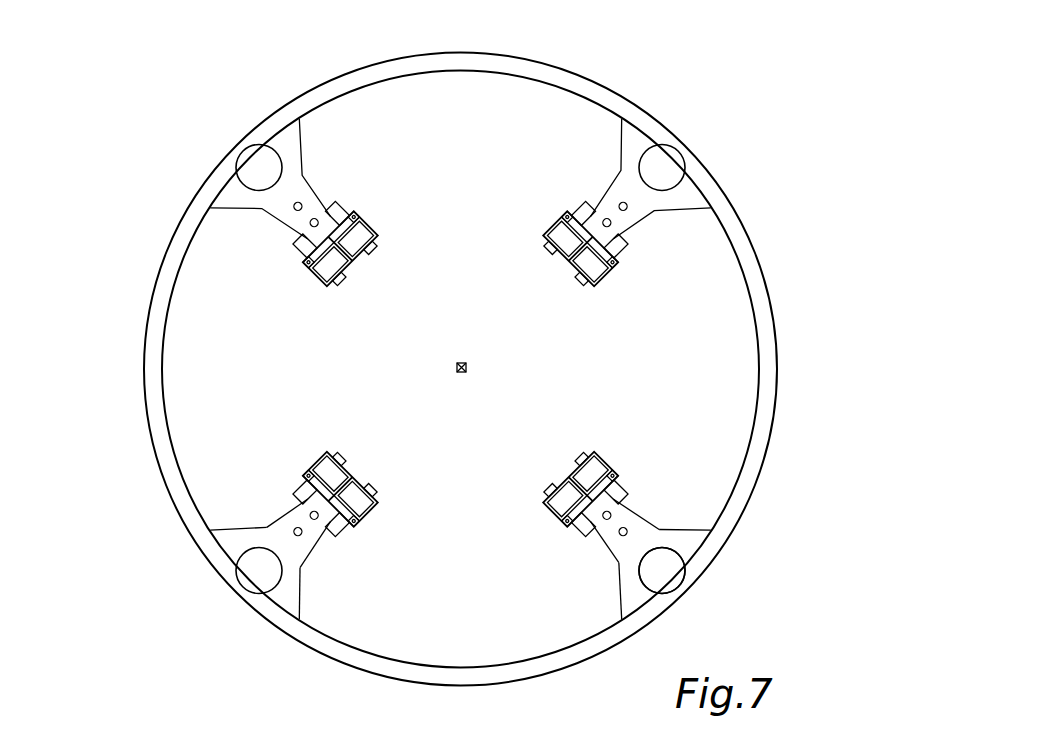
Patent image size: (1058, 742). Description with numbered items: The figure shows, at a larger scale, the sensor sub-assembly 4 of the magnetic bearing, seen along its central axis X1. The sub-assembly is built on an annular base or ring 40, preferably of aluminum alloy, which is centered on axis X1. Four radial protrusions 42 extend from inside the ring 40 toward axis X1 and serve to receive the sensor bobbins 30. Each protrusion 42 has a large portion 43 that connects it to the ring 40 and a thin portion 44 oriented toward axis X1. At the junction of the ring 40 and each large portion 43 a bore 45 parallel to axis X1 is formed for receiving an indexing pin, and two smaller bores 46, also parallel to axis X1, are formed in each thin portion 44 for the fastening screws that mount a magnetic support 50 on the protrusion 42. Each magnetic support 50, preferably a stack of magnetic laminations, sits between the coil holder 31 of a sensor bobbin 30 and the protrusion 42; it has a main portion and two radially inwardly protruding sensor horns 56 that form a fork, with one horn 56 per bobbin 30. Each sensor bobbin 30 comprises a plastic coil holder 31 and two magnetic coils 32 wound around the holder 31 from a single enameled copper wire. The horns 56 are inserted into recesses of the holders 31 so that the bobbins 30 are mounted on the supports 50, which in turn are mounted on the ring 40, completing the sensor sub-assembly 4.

The sensor sub-assembly 4 is at (203, 120).
The annular base or ring 40 is at (737, 232).
The magnetic support 50 is at (356, 245).
The sensor horn 56 is at (347, 277).
The magnetic sensor bobbin 30 is at (584, 244).
The coil holder 31 is at (622, 252).
The magnetic coil 32 is at (603, 280).
The radial protrusion 42 is at (598, 560).
The thin portion 44 is at (297, 515).
The smaller bore 46 is at (322, 536).
The large portion 43 is at (672, 545).
The bore 45 is at (664, 570).
The axis X1 is at (474, 380).